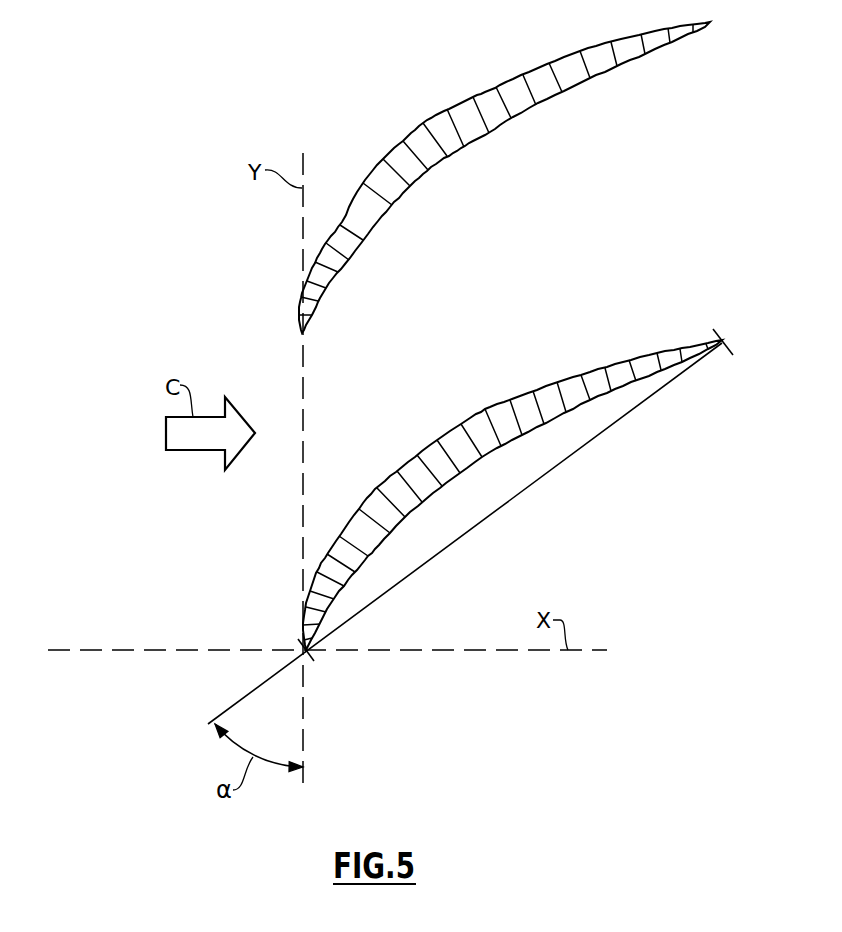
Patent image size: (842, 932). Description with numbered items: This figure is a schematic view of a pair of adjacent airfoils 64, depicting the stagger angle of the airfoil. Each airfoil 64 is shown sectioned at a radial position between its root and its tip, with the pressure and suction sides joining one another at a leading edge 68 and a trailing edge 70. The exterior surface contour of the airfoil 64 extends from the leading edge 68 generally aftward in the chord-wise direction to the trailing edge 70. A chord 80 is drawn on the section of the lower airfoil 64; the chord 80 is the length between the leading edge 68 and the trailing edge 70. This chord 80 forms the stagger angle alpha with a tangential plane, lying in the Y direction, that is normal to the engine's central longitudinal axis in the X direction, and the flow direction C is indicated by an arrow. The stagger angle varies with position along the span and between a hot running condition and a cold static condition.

The airfoil 64 is at (485, 177).
The leading edge 68 is at (307, 658).
The trailing edge 70 is at (723, 337).
The chord 80 is at (482, 520).